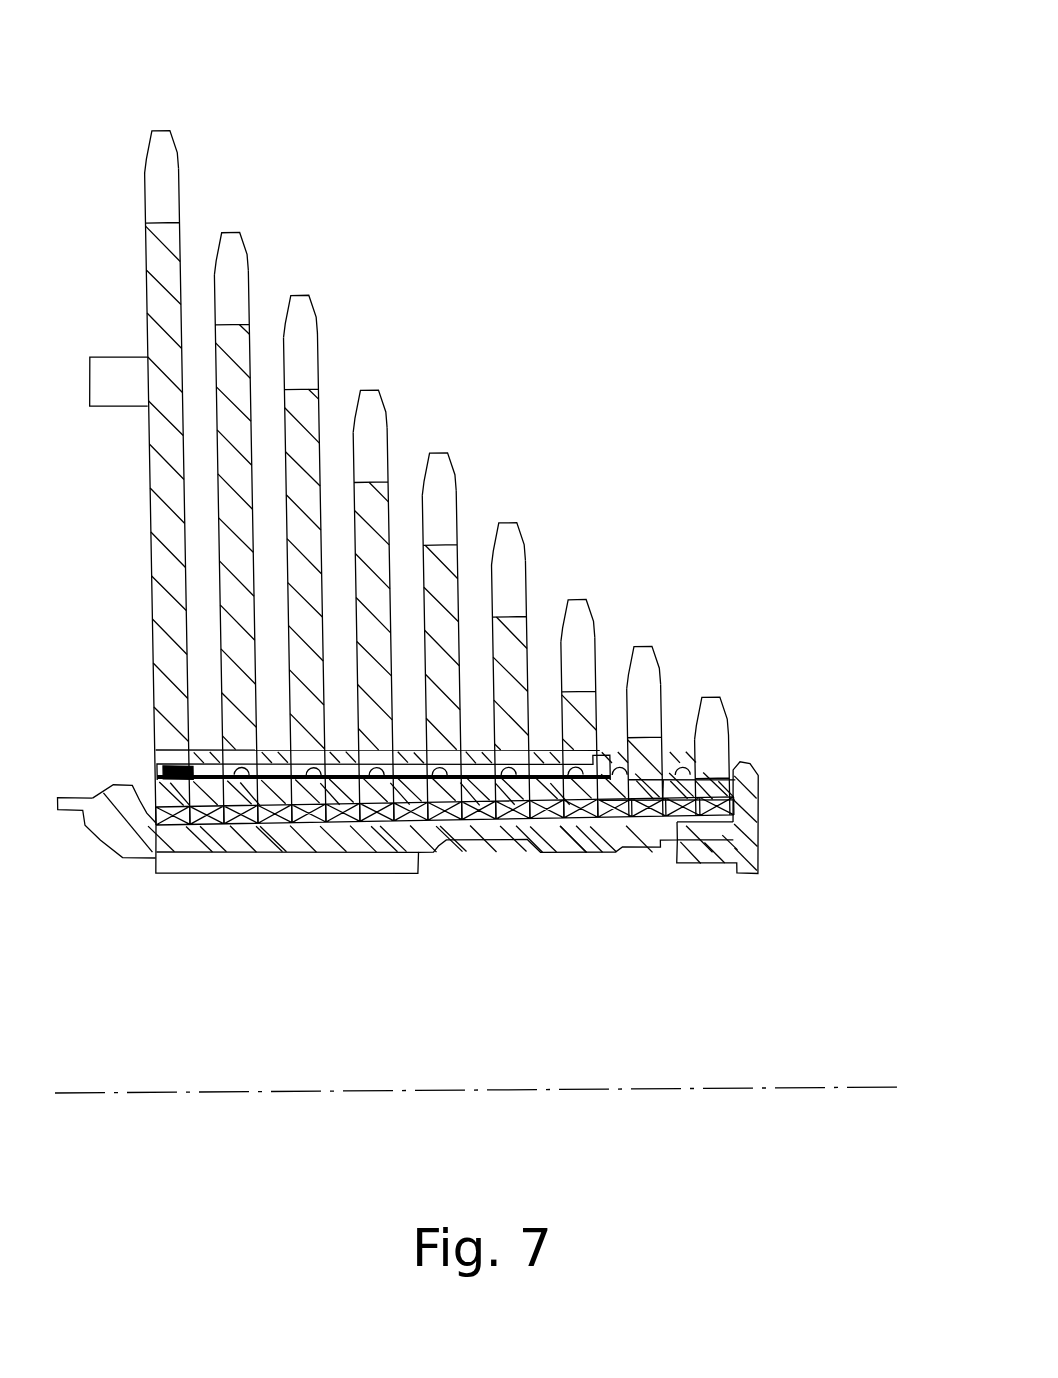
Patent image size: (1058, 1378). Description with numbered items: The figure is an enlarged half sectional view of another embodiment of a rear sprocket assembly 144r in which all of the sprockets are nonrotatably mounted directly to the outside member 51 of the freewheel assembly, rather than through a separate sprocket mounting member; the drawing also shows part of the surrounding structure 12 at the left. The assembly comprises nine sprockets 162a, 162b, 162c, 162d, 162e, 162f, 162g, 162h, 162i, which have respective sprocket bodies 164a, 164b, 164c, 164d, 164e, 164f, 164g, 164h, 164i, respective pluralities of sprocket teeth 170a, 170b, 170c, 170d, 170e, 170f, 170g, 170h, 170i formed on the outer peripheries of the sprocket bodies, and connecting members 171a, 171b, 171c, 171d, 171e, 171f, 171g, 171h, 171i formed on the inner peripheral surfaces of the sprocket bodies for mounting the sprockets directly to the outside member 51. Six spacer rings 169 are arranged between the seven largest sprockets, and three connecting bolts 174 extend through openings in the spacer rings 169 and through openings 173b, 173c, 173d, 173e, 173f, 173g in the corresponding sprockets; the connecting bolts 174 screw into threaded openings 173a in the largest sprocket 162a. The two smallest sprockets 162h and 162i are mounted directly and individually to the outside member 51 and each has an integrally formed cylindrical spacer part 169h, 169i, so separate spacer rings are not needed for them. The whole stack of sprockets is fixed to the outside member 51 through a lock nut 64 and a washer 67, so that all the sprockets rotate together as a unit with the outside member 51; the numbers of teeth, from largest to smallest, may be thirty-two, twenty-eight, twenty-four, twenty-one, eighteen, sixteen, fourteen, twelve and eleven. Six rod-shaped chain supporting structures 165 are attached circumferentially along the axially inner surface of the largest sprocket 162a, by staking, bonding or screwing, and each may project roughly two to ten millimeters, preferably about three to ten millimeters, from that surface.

The sprocket 162a is at (275, 419).
The sprocket body 164a is at (184, 150).
The sprocket teeth 170a is at (186, 218).
The sprocket 162b is at (355, 476).
The sprocket body 164b is at (252, 252).
The sprocket teeth 170b is at (254, 314).
The sprocket 162c is at (431, 508).
The sprocket body 164c is at (319, 318).
The sprocket teeth 170c is at (318, 381).
The sprocket 162d is at (489, 555).
The sprocket body 164d is at (385, 414).
The sprocket teeth 170d is at (384, 472).
The sprocket 162e is at (563, 586).
The sprocket body 164e is at (451, 477).
The sprocket teeth 170e is at (450, 535).
The sprocket 162f is at (630, 618).
The sprocket body 164f is at (517, 551).
The sprocket teeth 170f is at (516, 608).
The sprocket 162g is at (682, 646).
The sprocket body 164g is at (586, 617).
The sprocket teeth 170g is at (585, 683).
The sprocket 162h is at (734, 675).
The sprocket body 164h is at (656, 664).
The sprocket teeth 170h is at (654, 734).
The sprocket 162i is at (798, 727).
The sprocket body 164i is at (722, 735).
The sprocket teeth 170i is at (723, 772).
The spacer ring 169 is at (243, 779).
The cylindrical spacer part 169h is at (623, 787).
The cylindrical spacer part 169i is at (686, 788).
The connecting member 171a is at (162, 832).
The connecting member 171b is at (200, 851).
The connecting member 171c is at (270, 852).
The connecting member 171d is at (385, 854).
The connecting member 171e is at (450, 855).
The connecting member 171f is at (530, 857).
The connecting member 171g is at (590, 858).
The connecting member 171h is at (639, 874).
The connecting member 171i is at (699, 872).
The threaded opening 173a is at (180, 800).
The opening 173b is at (250, 802).
The opening 173c is at (330, 803).
The opening 173d is at (400, 804).
The opening 173e is at (470, 805).
The opening 173f is at (505, 806).
The opening 173g is at (560, 807).
The connecting bolt 174 is at (575, 842).
The rear sprocket assembly 144r is at (775, 691).
The housing 12 is at (79, 789).
The chain supporting structure 165 is at (127, 404).
The outside member 51 is at (161, 770).
The washer 67 is at (749, 786).
The lock nut 64 is at (735, 835).